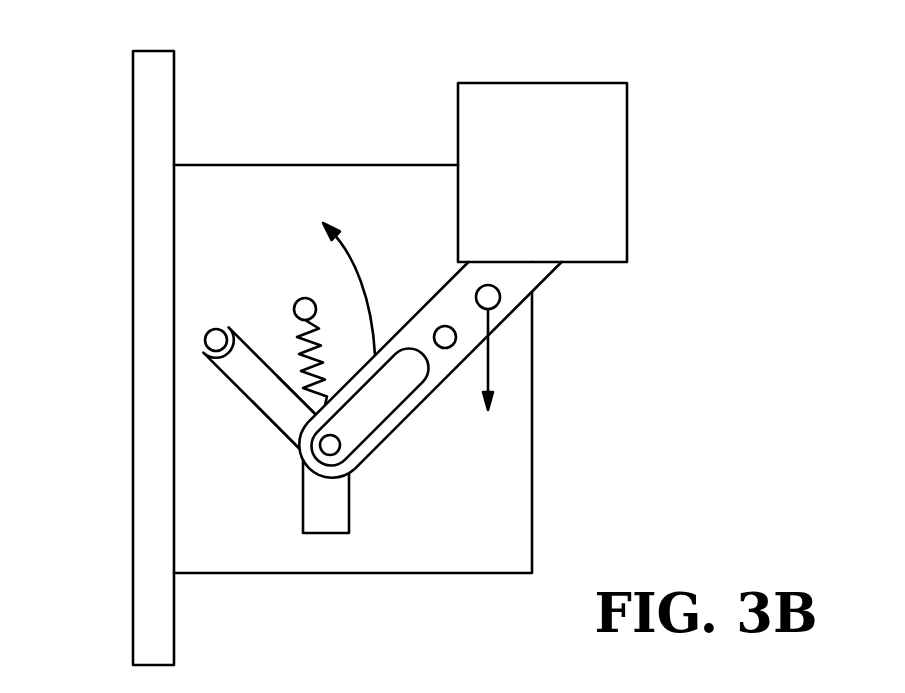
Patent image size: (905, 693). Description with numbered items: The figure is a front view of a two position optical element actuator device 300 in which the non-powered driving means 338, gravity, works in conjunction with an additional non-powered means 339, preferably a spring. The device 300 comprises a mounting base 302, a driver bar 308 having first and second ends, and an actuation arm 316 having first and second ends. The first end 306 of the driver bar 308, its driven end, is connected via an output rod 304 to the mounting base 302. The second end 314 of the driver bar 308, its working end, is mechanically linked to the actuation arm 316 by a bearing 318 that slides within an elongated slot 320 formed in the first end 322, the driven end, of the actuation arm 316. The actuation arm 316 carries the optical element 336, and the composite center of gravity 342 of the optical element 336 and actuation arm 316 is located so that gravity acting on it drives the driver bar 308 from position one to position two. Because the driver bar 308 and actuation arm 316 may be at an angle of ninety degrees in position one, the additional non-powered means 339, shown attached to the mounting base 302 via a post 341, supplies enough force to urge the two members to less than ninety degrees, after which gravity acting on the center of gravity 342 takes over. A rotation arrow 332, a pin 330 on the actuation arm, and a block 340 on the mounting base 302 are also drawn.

The two position optical element actuator device 300 is at (446, 358).
The mounting base 302 is at (175, 628).
The output rod 304 is at (138, 317).
The first end of driver bar 306 is at (203, 345).
The driver bar 308 is at (192, 372).
The second end of driver bar 314 is at (297, 425).
The actuation arm 316 is at (512, 285).
The bearing 318 is at (352, 458).
The elongated slot 320 is at (426, 384).
The first end of actuation arm 322 is at (302, 467).
The pin on lever 330 is at (437, 330).
The lever rotation arrow 332 is at (348, 247).
The optical element 336 is at (558, 128).
The non-powered driving means 338 is at (492, 377).
The additional non-powered means 339 is at (280, 313).
The stop block 340 is at (355, 533).
The post 341 is at (305, 297).
The composite center of gravity 342 is at (498, 302).